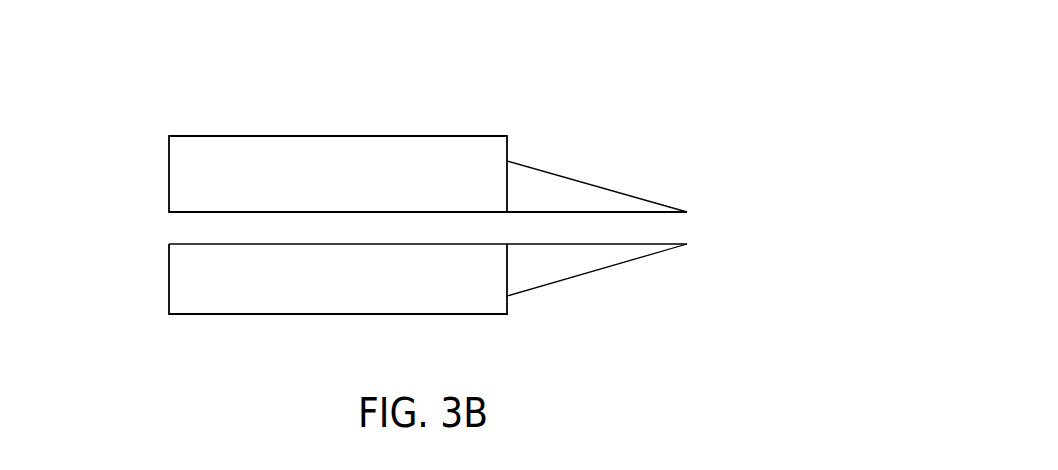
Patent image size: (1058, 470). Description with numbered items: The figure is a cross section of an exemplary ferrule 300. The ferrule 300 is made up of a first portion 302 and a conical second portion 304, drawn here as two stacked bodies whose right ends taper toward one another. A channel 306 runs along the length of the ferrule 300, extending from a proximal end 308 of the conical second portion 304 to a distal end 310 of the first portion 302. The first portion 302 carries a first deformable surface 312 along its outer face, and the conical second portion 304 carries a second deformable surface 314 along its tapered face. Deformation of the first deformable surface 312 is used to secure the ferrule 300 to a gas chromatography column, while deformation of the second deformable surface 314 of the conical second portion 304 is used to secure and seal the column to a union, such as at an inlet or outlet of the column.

The ferrule 300 is at (620, 93).
The first portion 302 is at (413, 300).
The conical second portion 304 is at (560, 263).
The channel 306 is at (243, 225).
The proximal end 308 is at (683, 211).
The distal end 310 is at (169, 164).
The first deformable surface 312 is at (358, 135).
The second deformable surface 314 is at (580, 179).